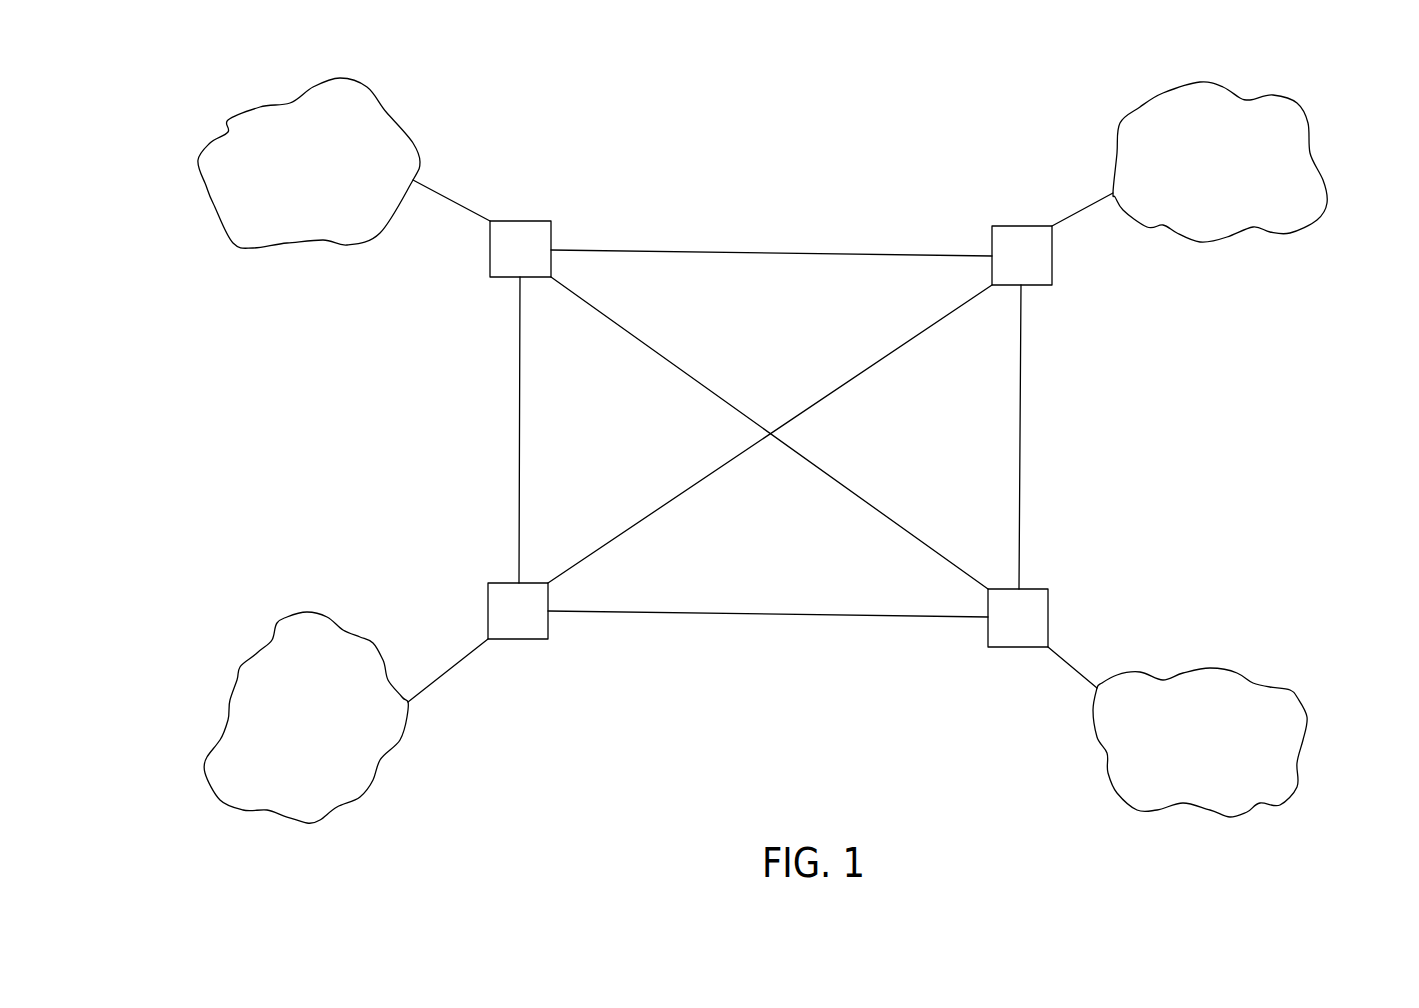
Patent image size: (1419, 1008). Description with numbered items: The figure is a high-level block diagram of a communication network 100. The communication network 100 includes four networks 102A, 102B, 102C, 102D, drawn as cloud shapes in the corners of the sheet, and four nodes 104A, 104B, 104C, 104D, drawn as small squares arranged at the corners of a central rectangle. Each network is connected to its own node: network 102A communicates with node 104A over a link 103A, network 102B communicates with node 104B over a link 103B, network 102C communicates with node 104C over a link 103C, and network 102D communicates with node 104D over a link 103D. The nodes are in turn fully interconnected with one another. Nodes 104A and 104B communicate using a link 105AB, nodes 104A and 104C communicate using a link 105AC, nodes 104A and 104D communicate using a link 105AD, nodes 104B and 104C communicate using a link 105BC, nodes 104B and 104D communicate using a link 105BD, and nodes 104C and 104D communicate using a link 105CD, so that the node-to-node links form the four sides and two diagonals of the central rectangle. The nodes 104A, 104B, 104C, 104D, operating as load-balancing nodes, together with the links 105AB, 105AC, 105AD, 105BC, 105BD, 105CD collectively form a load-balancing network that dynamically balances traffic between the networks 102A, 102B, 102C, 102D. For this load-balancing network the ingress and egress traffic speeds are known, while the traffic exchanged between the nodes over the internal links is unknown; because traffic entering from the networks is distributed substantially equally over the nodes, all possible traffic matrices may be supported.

The communication network 100 is at (144, 90).
The network 102A is at (235, 250).
The network 102B is at (237, 680).
The network 102C is at (1308, 123).
The network 102D is at (1297, 697).
The link 103A is at (452, 203).
The link 103B is at (437, 678).
The link 103C is at (1075, 216).
The link 103D is at (1068, 665).
The node 104A is at (551, 221).
The node 104B is at (548, 639).
The node 104C is at (992, 226).
The node 104D is at (1048, 589).
The link 105AB is at (519, 488).
The link 105AC is at (810, 256).
The link 105AD is at (668, 358).
The link 105BC is at (840, 387).
The link 105BD is at (690, 612).
The link 105CD is at (1018, 422).